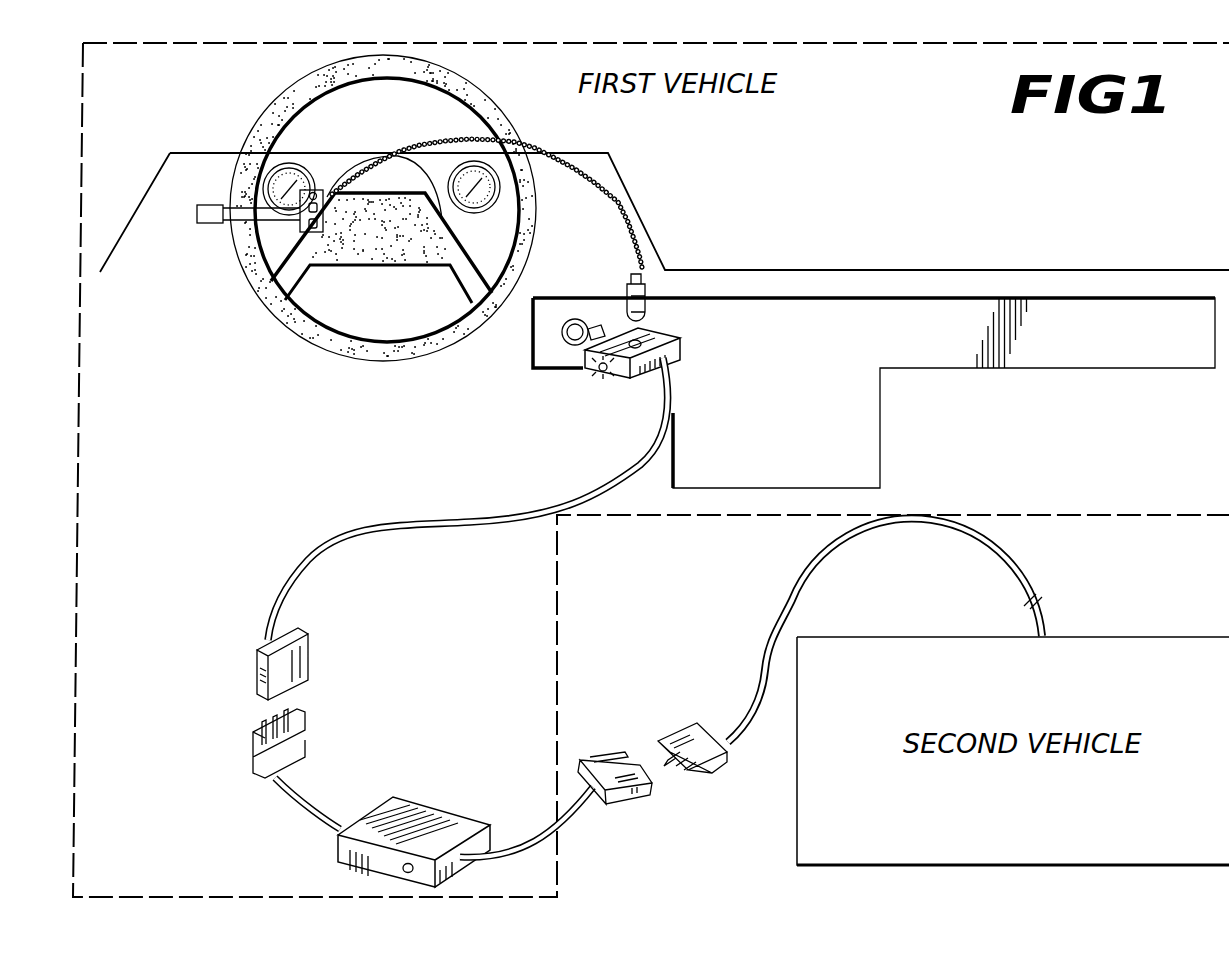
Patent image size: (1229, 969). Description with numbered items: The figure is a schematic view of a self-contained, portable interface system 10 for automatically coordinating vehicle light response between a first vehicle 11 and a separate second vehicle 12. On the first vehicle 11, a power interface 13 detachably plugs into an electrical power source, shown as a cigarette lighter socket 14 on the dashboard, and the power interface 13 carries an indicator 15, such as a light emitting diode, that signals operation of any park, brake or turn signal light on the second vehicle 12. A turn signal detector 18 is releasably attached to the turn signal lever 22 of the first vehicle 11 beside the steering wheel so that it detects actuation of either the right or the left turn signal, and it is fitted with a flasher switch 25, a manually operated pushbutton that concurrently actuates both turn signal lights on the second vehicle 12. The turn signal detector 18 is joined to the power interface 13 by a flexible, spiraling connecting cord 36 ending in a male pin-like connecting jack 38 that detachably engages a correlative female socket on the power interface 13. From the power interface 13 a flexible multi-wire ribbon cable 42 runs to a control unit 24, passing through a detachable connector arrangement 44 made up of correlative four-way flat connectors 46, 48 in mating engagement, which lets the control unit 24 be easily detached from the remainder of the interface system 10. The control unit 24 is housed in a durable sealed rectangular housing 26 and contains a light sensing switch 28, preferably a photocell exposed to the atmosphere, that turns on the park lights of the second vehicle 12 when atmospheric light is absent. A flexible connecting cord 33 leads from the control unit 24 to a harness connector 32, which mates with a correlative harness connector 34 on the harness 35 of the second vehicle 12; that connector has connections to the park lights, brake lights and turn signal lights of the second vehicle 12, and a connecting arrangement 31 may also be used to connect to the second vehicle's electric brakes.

The interface system 10 is at (488, 474).
The first vehicle 11 is at (1228, 433).
The second vehicle 12 is at (860, 636).
The power interface 13 is at (657, 374).
The cigarette lighter socket 14 is at (556, 335).
The indicator 15 is at (600, 378).
The turn signal detector 18 is at (285, 236).
The turn signal lever 22 is at (198, 216).
The control unit 24 is at (340, 830).
The flasher switch 25 is at (325, 190).
The rectangular housing 26 is at (415, 808).
The light sensing switch 28 is at (400, 870).
The connecting arrangement 31 is at (652, 774).
The harness connector 32 is at (588, 758).
The flexible connecting cord 33 is at (525, 843).
The correlative harness connector 34 is at (690, 726).
The harness 35 is at (765, 643).
The spiraling connecting cord 36 is at (612, 163).
The male pin-like connecting jack 38 is at (651, 283).
The multi-wire ribbon cable 42 is at (650, 333).
The detachable connector arrangement 44 is at (270, 695).
The four-way flat connector 46 is at (307, 640).
The four-way flat connector 48 is at (305, 745).